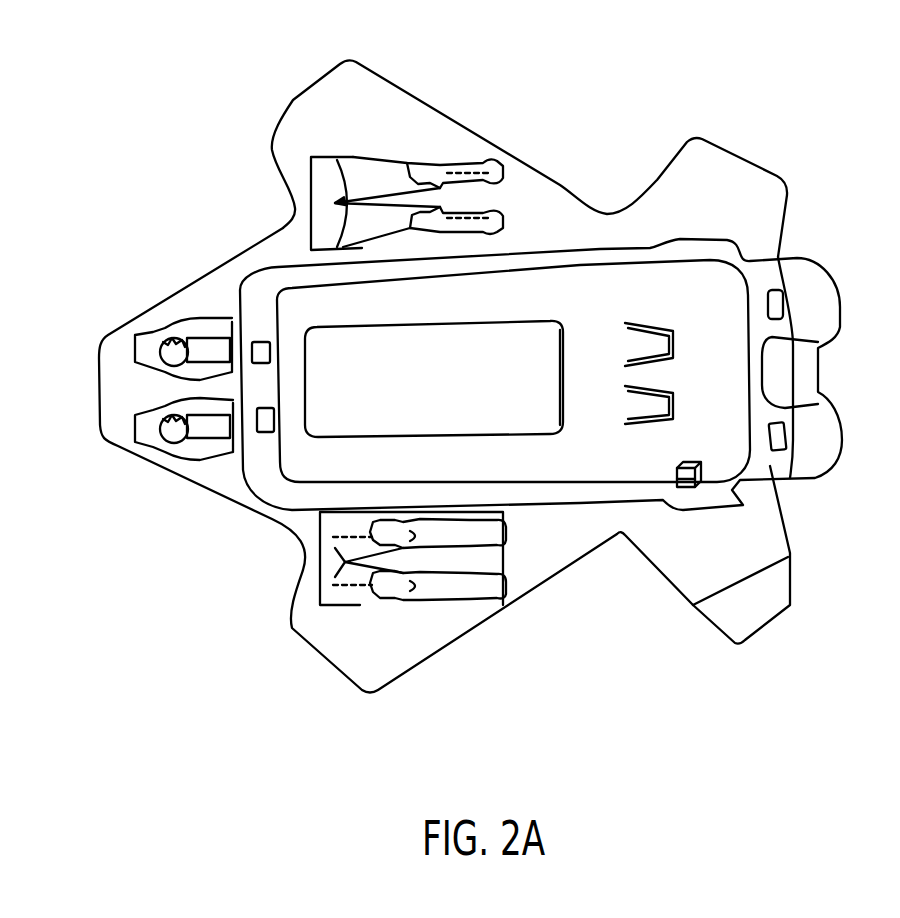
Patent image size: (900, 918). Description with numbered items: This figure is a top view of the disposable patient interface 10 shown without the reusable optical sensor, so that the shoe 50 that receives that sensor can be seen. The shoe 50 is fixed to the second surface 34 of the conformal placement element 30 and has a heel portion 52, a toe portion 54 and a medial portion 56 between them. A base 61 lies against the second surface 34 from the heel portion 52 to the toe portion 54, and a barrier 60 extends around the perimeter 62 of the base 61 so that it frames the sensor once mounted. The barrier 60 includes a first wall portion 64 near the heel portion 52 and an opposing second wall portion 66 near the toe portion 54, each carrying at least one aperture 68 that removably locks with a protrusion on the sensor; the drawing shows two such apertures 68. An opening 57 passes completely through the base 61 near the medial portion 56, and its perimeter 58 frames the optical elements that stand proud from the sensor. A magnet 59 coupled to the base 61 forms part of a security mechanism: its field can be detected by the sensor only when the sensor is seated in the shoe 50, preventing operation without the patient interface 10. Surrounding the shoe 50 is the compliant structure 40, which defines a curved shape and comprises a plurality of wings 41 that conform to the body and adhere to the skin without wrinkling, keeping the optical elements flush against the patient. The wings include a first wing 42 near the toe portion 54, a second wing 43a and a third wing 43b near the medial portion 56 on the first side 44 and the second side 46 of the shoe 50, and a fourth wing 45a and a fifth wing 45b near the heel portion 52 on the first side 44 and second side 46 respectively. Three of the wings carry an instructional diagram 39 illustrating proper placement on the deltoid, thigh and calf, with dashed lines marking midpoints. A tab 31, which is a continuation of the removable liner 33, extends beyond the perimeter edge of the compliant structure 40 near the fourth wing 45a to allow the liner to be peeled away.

The patient interface 10 is at (150, 103).
The conformal placement element 30 is at (90, 330).
The tab 31 is at (747, 620).
The removable liner 33 is at (787, 601).
The second surface 34 is at (643, 530).
The instructional diagram 39 is at (320, 192).
The compliant structure 40 is at (303, 110).
The plurality of wings 41 is at (340, 78).
The first wing 42 is at (127, 407).
The second wing 43a is at (358, 667).
The third wing 43b is at (358, 80).
The first side 44 is at (548, 557).
The fourth wing 45a is at (700, 593).
The fifth wing 45b is at (695, 163).
The second side 46 is at (570, 213).
The shoe 50 is at (272, 503).
The heel portion 52 is at (720, 282).
The toe portion 54 is at (285, 305).
The medial portion 56 is at (487, 293).
The opening 57 is at (448, 407).
The perimeter 58 is at (418, 323).
The magnet 59 is at (690, 487).
The barrier 60 is at (377, 500).
The base 61 is at (600, 360).
The perimeter 62 is at (284, 462).
The first wall portion 64 is at (783, 477).
The second wall portion 66 is at (257, 300).
The aperture 68 is at (250, 347).